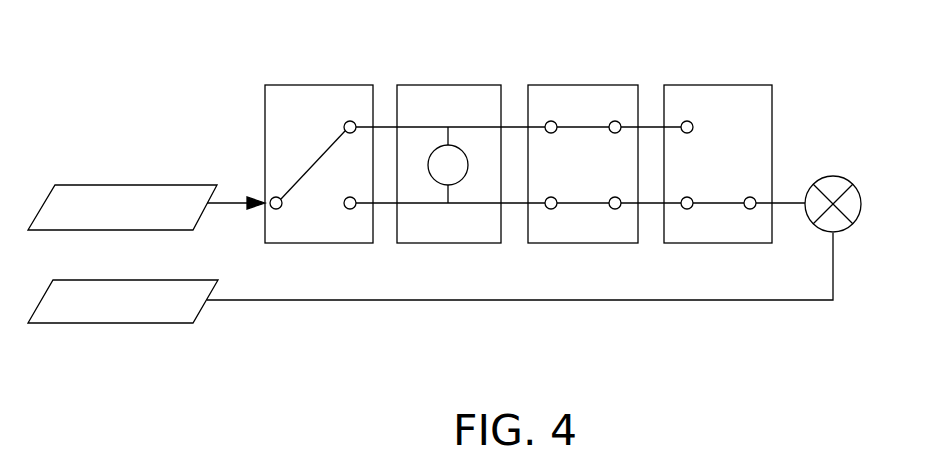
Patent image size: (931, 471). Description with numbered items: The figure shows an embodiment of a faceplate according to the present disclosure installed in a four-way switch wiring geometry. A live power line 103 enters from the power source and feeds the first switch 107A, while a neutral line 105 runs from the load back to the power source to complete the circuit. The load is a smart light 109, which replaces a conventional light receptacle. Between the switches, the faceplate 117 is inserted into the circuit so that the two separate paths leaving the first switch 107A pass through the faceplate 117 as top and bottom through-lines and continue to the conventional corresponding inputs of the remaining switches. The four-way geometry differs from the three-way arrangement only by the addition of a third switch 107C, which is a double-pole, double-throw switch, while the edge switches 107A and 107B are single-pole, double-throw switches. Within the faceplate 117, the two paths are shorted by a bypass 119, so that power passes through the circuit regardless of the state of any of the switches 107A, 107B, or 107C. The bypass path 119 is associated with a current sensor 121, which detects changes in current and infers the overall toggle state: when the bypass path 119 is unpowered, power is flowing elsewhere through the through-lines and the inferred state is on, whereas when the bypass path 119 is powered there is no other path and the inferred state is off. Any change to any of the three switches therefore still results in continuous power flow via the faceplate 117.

The live power line 103 is at (235, 202).
The neutral line 105 is at (232, 302).
The first switch 107A is at (300, 85).
The second switch 107B is at (707, 85).
The third switch 107C is at (573, 85).
The smart light 109 is at (836, 177).
The faceplate 117 is at (429, 85).
The bypass 119 is at (452, 146).
The current sensor 121 is at (431, 178).